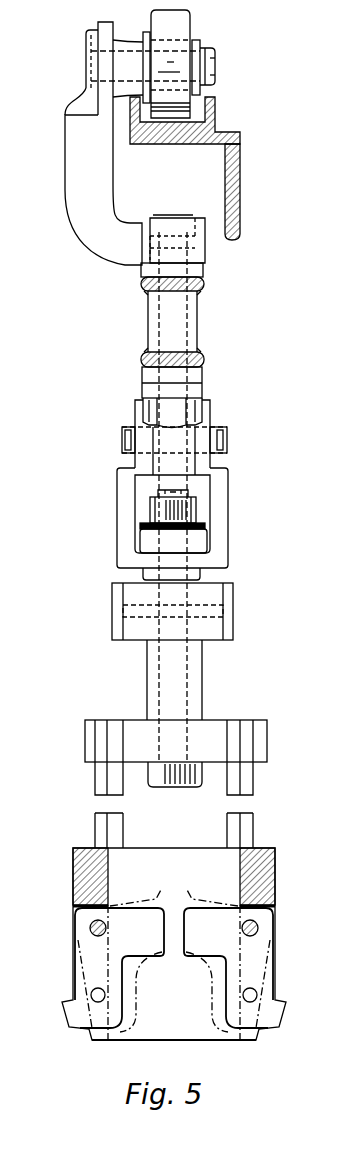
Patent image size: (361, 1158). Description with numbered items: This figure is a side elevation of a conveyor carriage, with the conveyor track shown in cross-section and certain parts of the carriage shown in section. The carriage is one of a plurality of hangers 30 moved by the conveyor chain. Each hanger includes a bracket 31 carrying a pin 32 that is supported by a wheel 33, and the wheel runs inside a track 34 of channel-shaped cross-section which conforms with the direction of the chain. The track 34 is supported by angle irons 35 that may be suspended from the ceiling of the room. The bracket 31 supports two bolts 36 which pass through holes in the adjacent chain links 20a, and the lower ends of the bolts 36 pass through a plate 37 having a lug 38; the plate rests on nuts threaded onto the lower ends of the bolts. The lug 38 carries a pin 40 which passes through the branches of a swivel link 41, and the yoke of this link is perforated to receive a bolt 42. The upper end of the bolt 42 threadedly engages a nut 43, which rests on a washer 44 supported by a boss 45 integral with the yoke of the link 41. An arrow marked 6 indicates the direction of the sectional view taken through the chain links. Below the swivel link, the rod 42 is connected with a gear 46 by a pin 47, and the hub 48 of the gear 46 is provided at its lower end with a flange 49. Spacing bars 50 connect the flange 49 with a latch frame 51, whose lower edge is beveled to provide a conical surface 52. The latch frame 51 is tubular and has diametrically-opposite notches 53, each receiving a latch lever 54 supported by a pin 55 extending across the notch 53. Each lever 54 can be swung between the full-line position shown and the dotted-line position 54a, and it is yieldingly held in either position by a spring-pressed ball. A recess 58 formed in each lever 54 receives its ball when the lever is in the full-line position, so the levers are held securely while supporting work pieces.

The hanger 30 is at (311, 616).
The bracket 31 is at (65, 157).
The pin 32 is at (86, 50).
The wheel 33 is at (190, 28).
The track 34 is at (212, 108).
The angle iron 35 is at (240, 160).
The bolt 36 is at (190, 333).
The chain link 20a is at (203, 285).
The plate 37 is at (201, 388).
The lug 38 is at (160, 466).
The pin 40 is at (227, 436).
The swivel link 41 is at (118, 492).
The nut 43 is at (195, 500).
The washer 44 is at (140, 524).
The boss 45 is at (140, 546).
The section arrow for FIG. 6 is at (242, 518).
The gear 46 is at (233, 595).
The pin 47 is at (112, 599).
The hub 48 is at (146, 669).
The bolt 42 is at (188, 667).
The flange 49 is at (85, 733).
The spacing bar 50 is at (258, 793).
The latch frame 51 is at (275, 884).
The notch 53 is at (73, 906).
The latch lever 54 is at (74, 961).
The dotted-line position of latch lever 54a is at (156, 896).
The pin 55 is at (101, 924).
The recess 58 is at (98, 988).
The conical surface 52 is at (92, 1040).